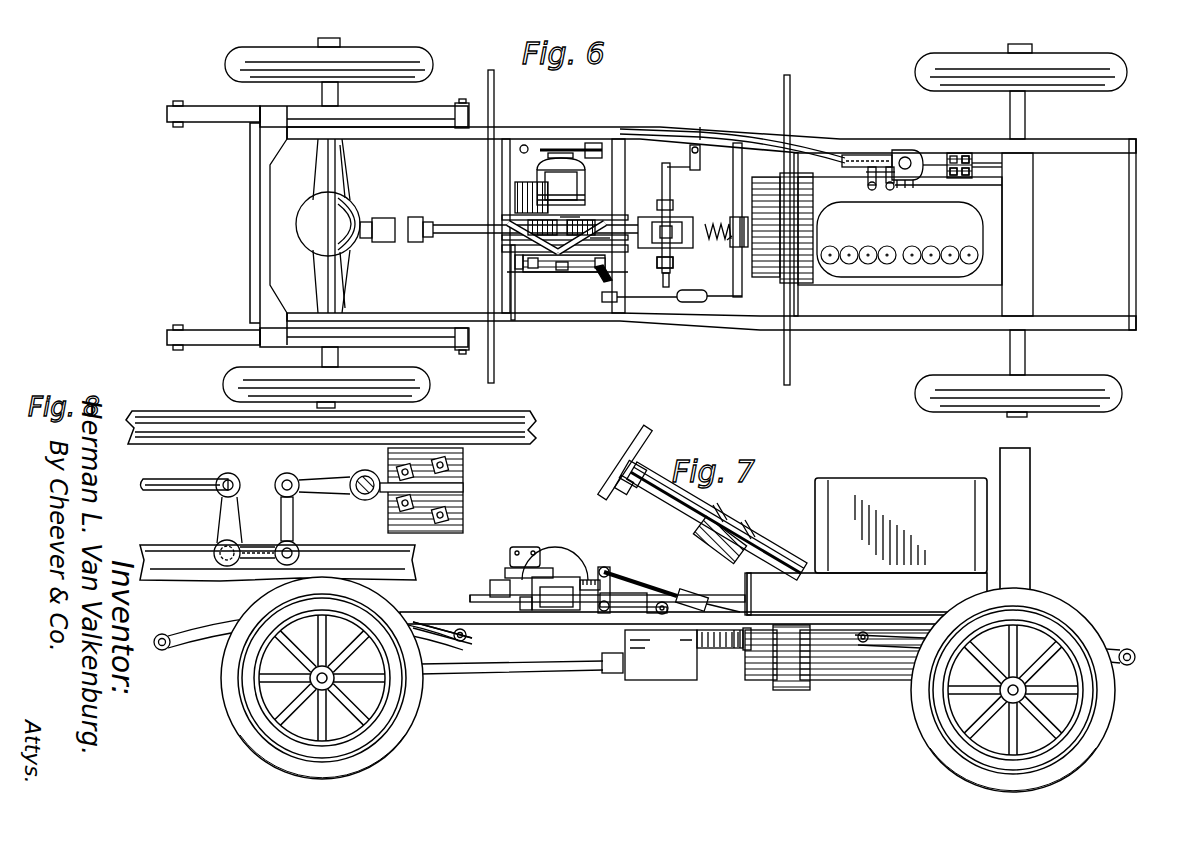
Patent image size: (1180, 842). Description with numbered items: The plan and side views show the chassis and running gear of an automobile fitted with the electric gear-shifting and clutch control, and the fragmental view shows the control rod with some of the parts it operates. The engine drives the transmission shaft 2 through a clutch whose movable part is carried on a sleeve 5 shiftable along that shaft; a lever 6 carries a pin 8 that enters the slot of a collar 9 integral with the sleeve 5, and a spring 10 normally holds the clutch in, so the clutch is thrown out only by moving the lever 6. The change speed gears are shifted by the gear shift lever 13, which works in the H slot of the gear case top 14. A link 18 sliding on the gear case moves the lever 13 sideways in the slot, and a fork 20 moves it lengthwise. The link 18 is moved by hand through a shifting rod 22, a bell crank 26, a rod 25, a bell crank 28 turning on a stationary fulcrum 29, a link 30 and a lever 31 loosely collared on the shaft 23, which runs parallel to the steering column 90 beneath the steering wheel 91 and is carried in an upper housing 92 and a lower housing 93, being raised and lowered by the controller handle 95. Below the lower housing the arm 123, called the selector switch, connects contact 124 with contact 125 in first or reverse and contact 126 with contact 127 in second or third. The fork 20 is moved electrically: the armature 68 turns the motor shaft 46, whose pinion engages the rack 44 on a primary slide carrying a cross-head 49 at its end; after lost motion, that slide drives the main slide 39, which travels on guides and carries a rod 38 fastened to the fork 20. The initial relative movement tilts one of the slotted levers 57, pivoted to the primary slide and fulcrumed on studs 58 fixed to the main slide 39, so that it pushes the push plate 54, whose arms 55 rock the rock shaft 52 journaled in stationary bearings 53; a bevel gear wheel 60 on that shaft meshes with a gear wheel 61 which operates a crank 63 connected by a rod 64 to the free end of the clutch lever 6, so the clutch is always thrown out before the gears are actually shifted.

In FIG. 6, the transmission shaft 2 is at (725, 240).
In FIG. 7, the transmission shaft 2 is at (730, 650).
In FIG. 6, the sleeve 5 is at (748, 230).
In FIG. 7, the sleeve 5 is at (748, 640).
In FIG. 6, the clutch lever 6 is at (742, 292).
In FIG. 7, the clutch lever 6 is at (745, 612).
In FIG. 6, the pin 8 is at (748, 238).
In FIG. 6, the collar 9 is at (745, 222).
In FIG. 7, the collar 9 is at (722, 645).
In FIG. 6, the clutch spring 10 is at (725, 232).
In FIG. 7, the clutch spring 10 is at (705, 658).
In FIG. 6, the gear shift lever 13 is at (660, 250).
In FIG. 6, the gear case top 14 is at (672, 200).
In FIG. 6, the link 18 is at (690, 222).
In FIG. 7, the link 18 is at (672, 597).
In FIG. 6, the fork 20 is at (690, 246).
In FIG. 7, the fork 20 is at (700, 606).
In FIG. 6, the shifting rod 22 is at (662, 170).
In FIG. 7, the shifting rod 22 is at (662, 614).
In FIG. 6, the shaft 23 is at (860, 155).
In FIG. 8, the shaft 23 is at (365, 497).
In FIG. 7, the shaft 23 is at (675, 512).
In FIG. 6, the rod 25 is at (815, 153).
In FIG. 8, the rod 25 is at (183, 480).
In FIG. 6, the bell crank 26 is at (700, 140).
In FIG. 6, the bell crank 28 is at (868, 172).
In FIG. 8, the bell crank 28 is at (226, 517).
In FIG. 6, the stationary fulcrum 29 is at (868, 186).
In FIG. 8, the stationary fulcrum 29 is at (222, 556).
In FIG. 6, the link 30 is at (898, 182).
In FIG. 8, the link 30 is at (293, 520).
In FIG. 6, the lever 31 is at (898, 150).
In FIG. 8, the lever 31 is at (318, 481).
In FIG. 6, the rod 38 is at (580, 222).
In FIG. 7, the rod 38 is at (605, 612).
In FIG. 7, the main slide 39 is at (437, 615).
In FIG. 6, the rack 44 is at (570, 218).
In FIG. 7, the rack 44 is at (590, 578).
In FIG. 6, the motor shaft 46 is at (512, 228).
In FIG. 6, the cross-head 49 is at (600, 232).
In FIG. 6, the rock shaft 52 is at (545, 268).
In FIG. 7, the rock shaft 52 is at (555, 612).
In FIG. 7, the stationary bearings 53 is at (522, 600).
In FIG. 6, the push plate 54 is at (540, 272).
In FIG. 7, the push plate 54 is at (562, 578).
In FIG. 7, the arms 55 is at (530, 595).
In FIG. 6, the slotted levers 57 is at (520, 262).
In FIG. 6, the studs 58 is at (537, 203).
In FIG. 6, the bevel gear wheel 60 is at (562, 270).
In FIG. 6, the gear wheel 61 is at (597, 272).
In FIG. 6, the crank 63 is at (602, 297).
In FIG. 7, the crank 63 is at (612, 583).
In FIG. 6, the rod 64 is at (662, 304).
In FIG. 7, the rod 64 is at (655, 576).
In FIG. 7, the armature 68 is at (548, 536).
In FIG. 7, the steering column 90 is at (695, 510).
In FIG. 7, the steering wheel 91 is at (633, 447).
In FIG. 7, the housing 92 is at (628, 490).
In FIG. 7, the housing 93 is at (717, 543).
In FIG. 7, the controller handle 95 is at (612, 503).
In FIG. 6, the selector switch arm 123 is at (1003, 165).
In FIG. 8, the selector switch arm 123 is at (465, 488).
In FIG. 6, the contact 124 is at (950, 153).
In FIG. 8, the contact 124 is at (397, 473).
In FIG. 6, the contact 125 is at (966, 155).
In FIG. 8, the contact 125 is at (460, 467).
In FIG. 6, the contact 126 is at (950, 174).
In FIG. 8, the contact 126 is at (404, 506).
In FIG. 6, the contact 127 is at (964, 178).
In FIG. 8, the contact 127 is at (465, 522).